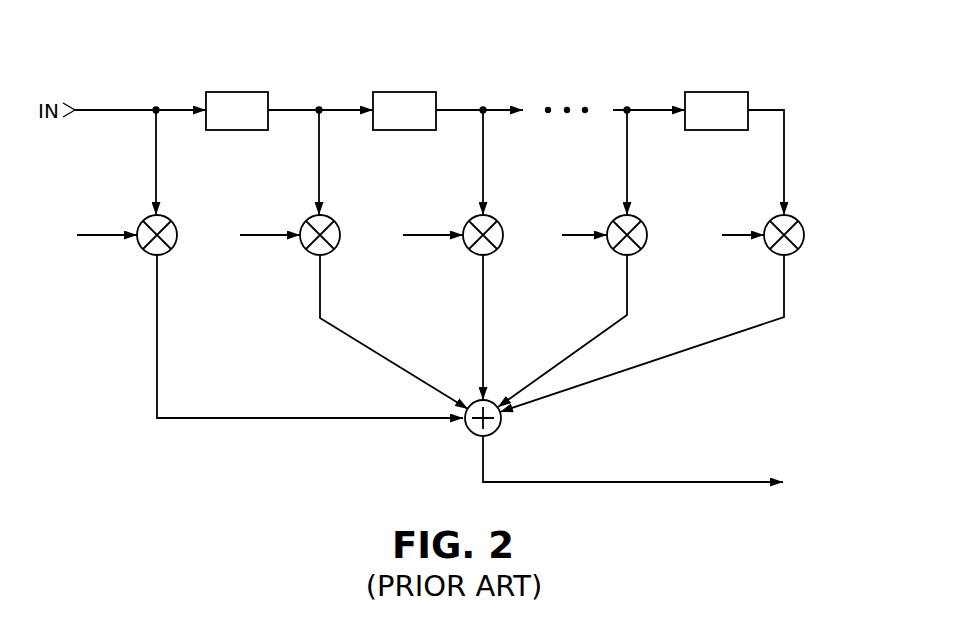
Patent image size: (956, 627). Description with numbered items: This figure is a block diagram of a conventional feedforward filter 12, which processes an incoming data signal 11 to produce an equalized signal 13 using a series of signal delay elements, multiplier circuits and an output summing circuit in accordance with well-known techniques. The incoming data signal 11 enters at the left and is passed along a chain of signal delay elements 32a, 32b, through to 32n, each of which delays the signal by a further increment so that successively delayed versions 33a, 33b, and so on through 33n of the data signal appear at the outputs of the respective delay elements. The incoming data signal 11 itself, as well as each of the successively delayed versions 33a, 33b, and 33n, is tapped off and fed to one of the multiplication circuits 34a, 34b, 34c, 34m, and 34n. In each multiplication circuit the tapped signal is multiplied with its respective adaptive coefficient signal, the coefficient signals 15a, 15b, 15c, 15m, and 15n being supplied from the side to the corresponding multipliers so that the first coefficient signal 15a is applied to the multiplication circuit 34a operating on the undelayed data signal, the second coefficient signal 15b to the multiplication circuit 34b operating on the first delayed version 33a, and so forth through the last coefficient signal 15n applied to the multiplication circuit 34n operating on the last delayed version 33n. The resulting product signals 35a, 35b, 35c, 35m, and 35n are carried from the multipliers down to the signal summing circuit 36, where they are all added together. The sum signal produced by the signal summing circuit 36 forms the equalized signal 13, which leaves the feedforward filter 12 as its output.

The incoming data signal 11 is at (113, 110).
The feedforward filter 12 is at (128, 441).
The equalized signal 13 is at (488, 457).
The adaptive coefficient signal 15a is at (94, 235).
The adaptive coefficient signal 15b is at (258, 235).
The adaptive coefficient signal 15c is at (421, 235).
The adaptive coefficient signal 15m is at (579, 235).
The adaptive coefficient signal 15n is at (736, 235).
The signal delay element 32a is at (232, 92).
The signal delay element 32b is at (400, 92).
The signal delay element 32n is at (712, 92).
The delayed version of the data signal 33a is at (297, 110).
The delayed version of the data signal 33b is at (465, 110).
The delayed version of the data signal 33n is at (765, 110).
The multiplication circuit 34a is at (171, 221).
The multiplication circuit 34b is at (334, 221).
The multiplication circuit 34c is at (497, 221).
The multiplication circuit 34m is at (641, 221).
The multiplication circuit 34n is at (805, 232).
The product signal 35a is at (158, 303).
The product signal 35b is at (321, 303).
The product signal 35c is at (484, 303).
The product signal 35m is at (628, 303).
The product signal 35n is at (785, 303).
The signal summing circuit 36 is at (470, 431).